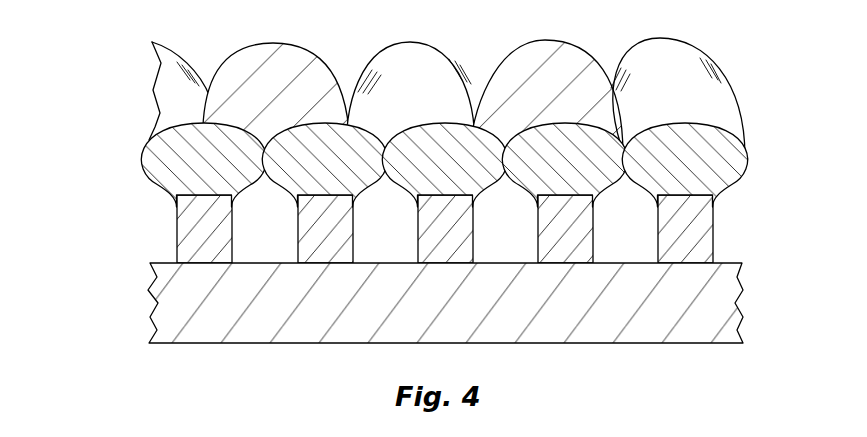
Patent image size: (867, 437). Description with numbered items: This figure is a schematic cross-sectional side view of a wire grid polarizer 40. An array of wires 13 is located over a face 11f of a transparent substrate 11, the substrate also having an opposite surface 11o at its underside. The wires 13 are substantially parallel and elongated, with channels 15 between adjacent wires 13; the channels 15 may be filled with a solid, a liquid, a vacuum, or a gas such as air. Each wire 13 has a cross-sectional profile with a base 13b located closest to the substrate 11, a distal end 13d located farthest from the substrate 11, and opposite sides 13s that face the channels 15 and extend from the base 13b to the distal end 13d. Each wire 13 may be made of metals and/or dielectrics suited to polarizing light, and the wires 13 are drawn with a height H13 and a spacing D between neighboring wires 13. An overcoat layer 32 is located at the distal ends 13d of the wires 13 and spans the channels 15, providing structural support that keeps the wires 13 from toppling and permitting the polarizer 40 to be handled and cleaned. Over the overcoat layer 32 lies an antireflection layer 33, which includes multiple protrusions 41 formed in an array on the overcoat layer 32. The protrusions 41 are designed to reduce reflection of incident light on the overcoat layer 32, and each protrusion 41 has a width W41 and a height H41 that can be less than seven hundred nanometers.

The transparent substrate 11 is at (457, 314).
The face of the substrate 11f is at (166, 262).
The opposite (back) surface of substrate 11o is at (693, 344).
The wires 13 is at (445, 229).
The distal end 13d is at (175, 196).
The base 13b is at (178, 264).
The opposite sides 13s is at (538, 249).
The channels 15 is at (253, 238).
The overcoat layer 32 is at (444, 165).
The antireflection layer 33 is at (106, 97).
The wire grid polarizer 40 is at (77, 282).
The protrusions 41 is at (161, 111).
The distance between pillars D is at (298, 265).
The width of protrusion W41 is at (205, 122).
The height of protrusion H41 is at (680, 37).
The height of pillar H13 is at (745, 195).